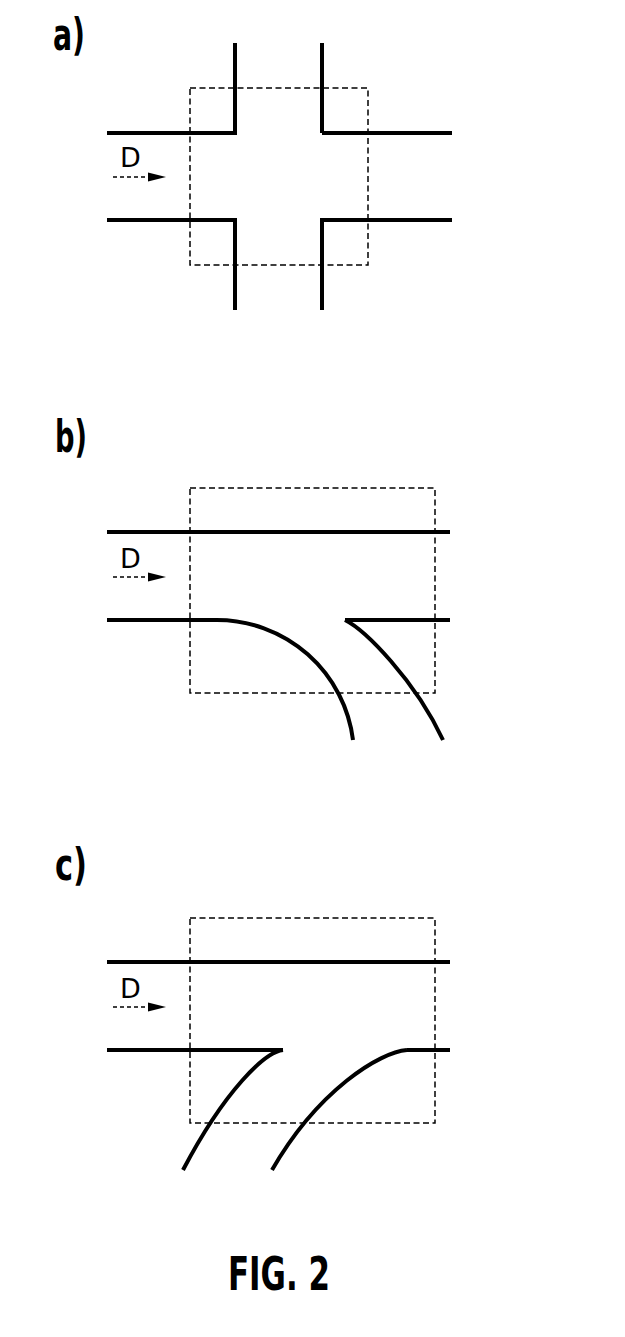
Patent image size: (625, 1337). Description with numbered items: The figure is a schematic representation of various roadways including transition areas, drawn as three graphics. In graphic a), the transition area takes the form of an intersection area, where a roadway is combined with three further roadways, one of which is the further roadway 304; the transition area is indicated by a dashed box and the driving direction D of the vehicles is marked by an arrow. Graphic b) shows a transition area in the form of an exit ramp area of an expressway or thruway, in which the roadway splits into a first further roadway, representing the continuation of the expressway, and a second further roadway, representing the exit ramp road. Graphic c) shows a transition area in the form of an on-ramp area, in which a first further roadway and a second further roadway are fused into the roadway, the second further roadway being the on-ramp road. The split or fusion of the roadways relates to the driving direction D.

The further roadway 304 is at (324, 60).